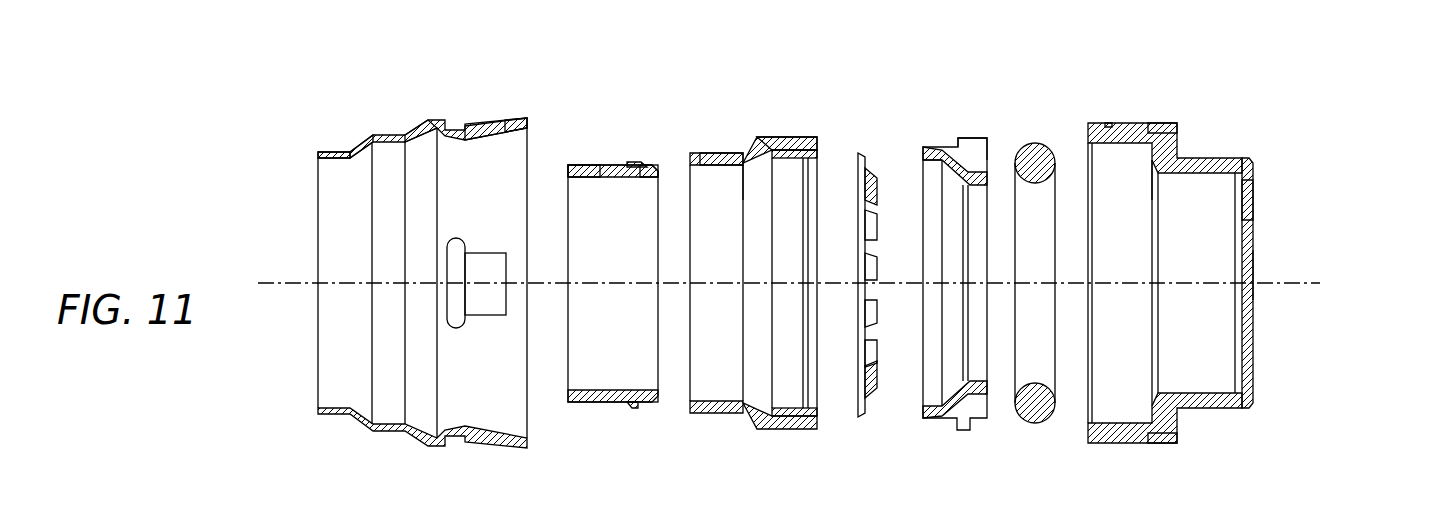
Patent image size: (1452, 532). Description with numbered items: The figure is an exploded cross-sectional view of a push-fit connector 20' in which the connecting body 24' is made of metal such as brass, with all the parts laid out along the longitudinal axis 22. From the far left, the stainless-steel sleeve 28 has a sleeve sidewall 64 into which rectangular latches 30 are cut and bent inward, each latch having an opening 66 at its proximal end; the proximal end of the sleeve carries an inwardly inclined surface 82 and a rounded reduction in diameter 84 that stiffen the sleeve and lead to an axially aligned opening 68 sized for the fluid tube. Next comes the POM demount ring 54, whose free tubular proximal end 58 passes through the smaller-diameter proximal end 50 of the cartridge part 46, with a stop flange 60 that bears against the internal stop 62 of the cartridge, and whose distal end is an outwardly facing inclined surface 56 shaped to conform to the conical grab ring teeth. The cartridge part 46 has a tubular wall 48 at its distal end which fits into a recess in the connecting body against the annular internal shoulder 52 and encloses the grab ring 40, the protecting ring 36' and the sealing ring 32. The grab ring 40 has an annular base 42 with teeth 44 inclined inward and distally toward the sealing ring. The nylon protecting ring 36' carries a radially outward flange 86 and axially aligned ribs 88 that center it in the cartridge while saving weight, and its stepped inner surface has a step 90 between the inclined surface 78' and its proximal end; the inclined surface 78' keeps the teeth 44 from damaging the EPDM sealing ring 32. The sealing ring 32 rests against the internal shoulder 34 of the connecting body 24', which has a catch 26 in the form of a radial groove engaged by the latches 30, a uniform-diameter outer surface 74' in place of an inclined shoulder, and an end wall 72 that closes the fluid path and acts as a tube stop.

The connector 20' is at (1340, 225).
The longitudinal axis 22 is at (270, 285).
The connecting body 24' is at (1194, 245).
The catch 26 is at (1107, 127).
The sleeve 28 is at (407, 234).
The latches 30 is at (485, 313).
The sealing ring 32 is at (1038, 137).
The internal shoulder 34 is at (1152, 157).
The protecting ring 36' is at (971, 215).
The grab ring 40 is at (886, 224).
The annular base 42 is at (863, 160).
The teeth 44 is at (877, 275).
The cartridge part 46 is at (777, 235).
The tubular wall 48 is at (798, 142).
The proximal end 50 is at (720, 155).
The internal shoulder 52 is at (770, 152).
The demount ring 54 is at (624, 228).
The outwardly facing surface 56 is at (647, 167).
The tubular proximal end 58 is at (583, 165).
The stop flange 60 is at (630, 162).
The internal stop 62 is at (743, 162).
The sleeve sidewall 64 is at (517, 118).
The opening 66 is at (448, 298).
The axially aligned opening 68 is at (327, 150).
The end wall 72 is at (1253, 192).
The uniform diameter outer surface 74' is at (1154, 253).
The inclined surface 78' is at (937, 284).
The inwardly inclined surface 82 is at (423, 123).
The rounded reduction in diameter 84 is at (362, 138).
The flange 86 is at (963, 140).
The ribs 88 is at (982, 138).
The step 90 is at (943, 163).